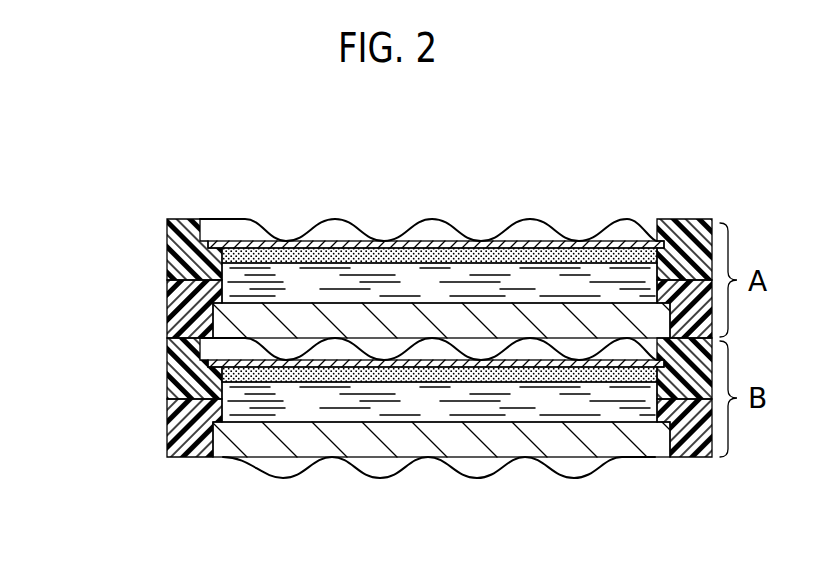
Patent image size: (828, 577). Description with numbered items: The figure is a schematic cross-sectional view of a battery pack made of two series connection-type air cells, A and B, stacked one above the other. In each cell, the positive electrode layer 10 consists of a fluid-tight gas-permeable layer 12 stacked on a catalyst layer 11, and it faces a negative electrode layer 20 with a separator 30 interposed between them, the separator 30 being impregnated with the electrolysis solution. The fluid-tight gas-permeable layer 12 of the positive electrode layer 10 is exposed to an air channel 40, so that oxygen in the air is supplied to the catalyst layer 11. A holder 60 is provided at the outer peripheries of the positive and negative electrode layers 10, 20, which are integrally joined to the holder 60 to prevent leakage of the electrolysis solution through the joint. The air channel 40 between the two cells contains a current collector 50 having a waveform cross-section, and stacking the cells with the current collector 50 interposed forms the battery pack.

The positive electrode layer 10 is at (351, 311).
The catalyst layer 11 is at (222, 377).
The fluid-tight gas-permeable layer 12 is at (223, 361).
The negative electrode layer 20 is at (215, 414).
The separator 30 is at (222, 386).
The air channel 40 is at (482, 348).
The current collector 50 is at (257, 345).
The holder 60 is at (174, 234).